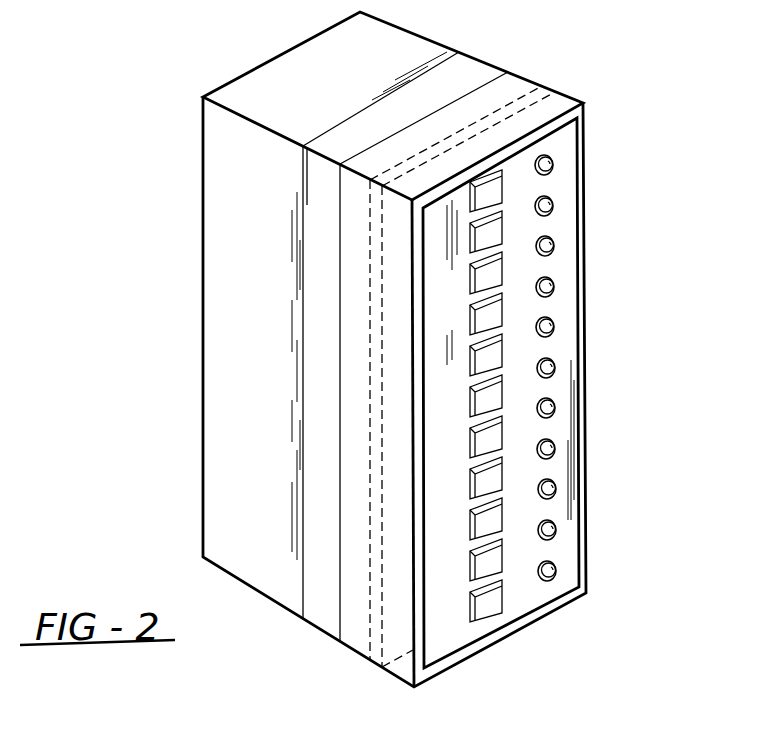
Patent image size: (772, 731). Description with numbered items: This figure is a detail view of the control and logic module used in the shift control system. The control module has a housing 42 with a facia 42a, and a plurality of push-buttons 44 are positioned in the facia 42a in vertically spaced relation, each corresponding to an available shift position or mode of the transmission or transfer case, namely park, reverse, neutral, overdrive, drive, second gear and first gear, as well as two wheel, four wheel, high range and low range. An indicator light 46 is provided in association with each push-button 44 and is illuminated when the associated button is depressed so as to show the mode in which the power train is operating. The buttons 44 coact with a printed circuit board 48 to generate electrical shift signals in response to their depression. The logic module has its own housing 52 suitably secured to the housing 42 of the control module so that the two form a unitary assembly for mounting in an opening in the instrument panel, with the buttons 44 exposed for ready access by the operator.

The housing 52 is at (273, 96).
The printed circuit board 48 is at (427, 152).
The housing 42 is at (533, 78).
The facia 42a is at (565, 433).
The push-buttons 44 is at (502, 272).
The indicator light 46 is at (551, 210).